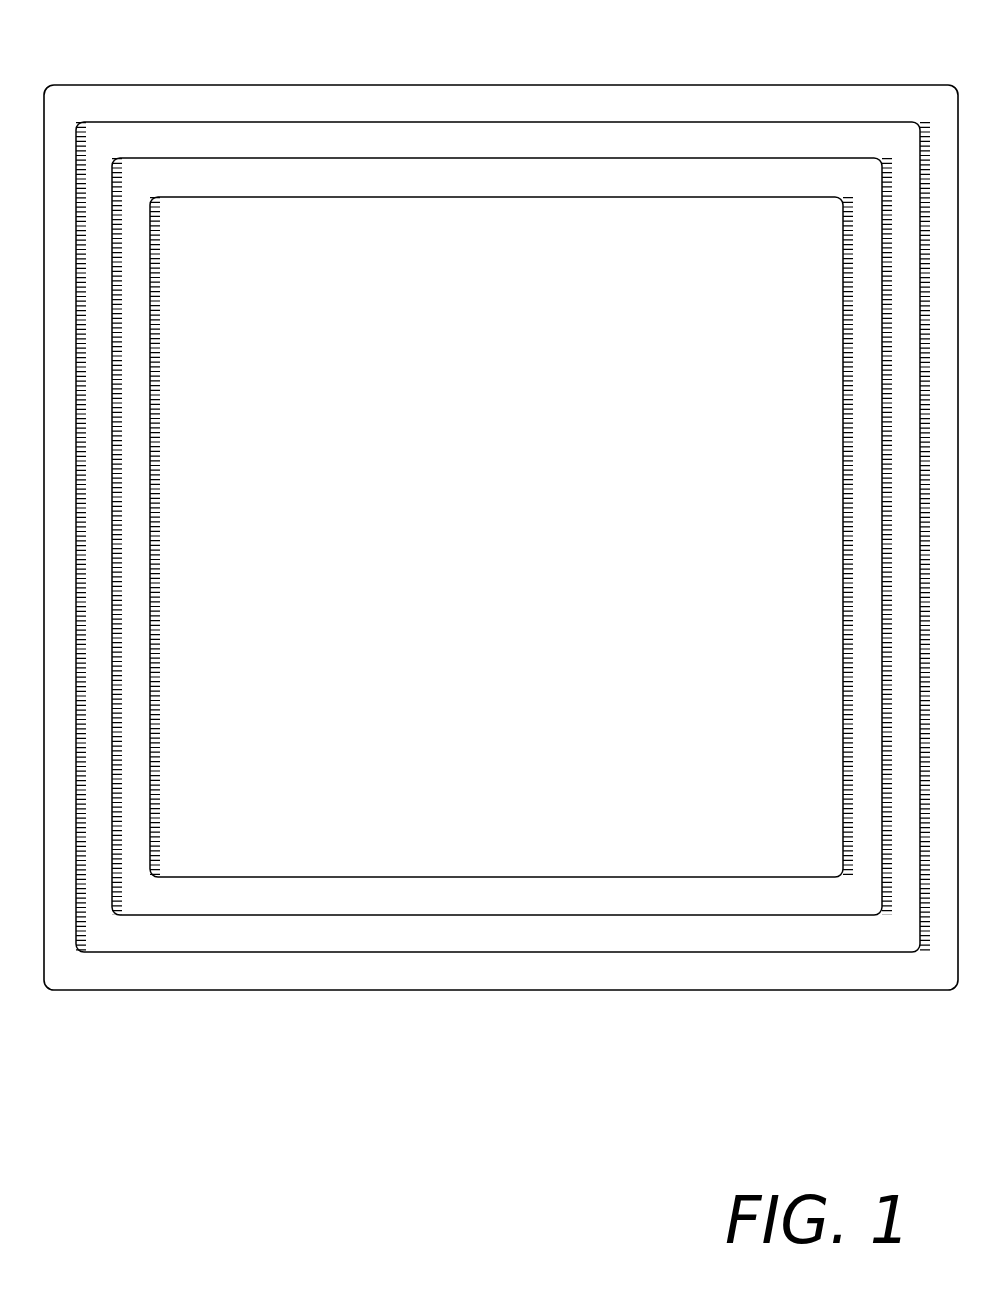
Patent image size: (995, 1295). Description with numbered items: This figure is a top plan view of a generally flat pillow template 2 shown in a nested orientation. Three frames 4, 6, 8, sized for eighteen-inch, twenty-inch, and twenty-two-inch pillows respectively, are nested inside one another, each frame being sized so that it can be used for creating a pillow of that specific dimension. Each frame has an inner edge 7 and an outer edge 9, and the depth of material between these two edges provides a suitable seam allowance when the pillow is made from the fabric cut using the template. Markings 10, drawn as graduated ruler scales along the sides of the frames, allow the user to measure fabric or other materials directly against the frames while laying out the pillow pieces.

The multi-scale ruler frame 2 is at (142, 70).
The outer edge 9 is at (322, 82).
The frame 4 is at (610, 105).
The frame 6 is at (677, 148).
The frame 8 is at (728, 183).
The inner edge 7 is at (328, 197).
The markings 10 is at (930, 415).